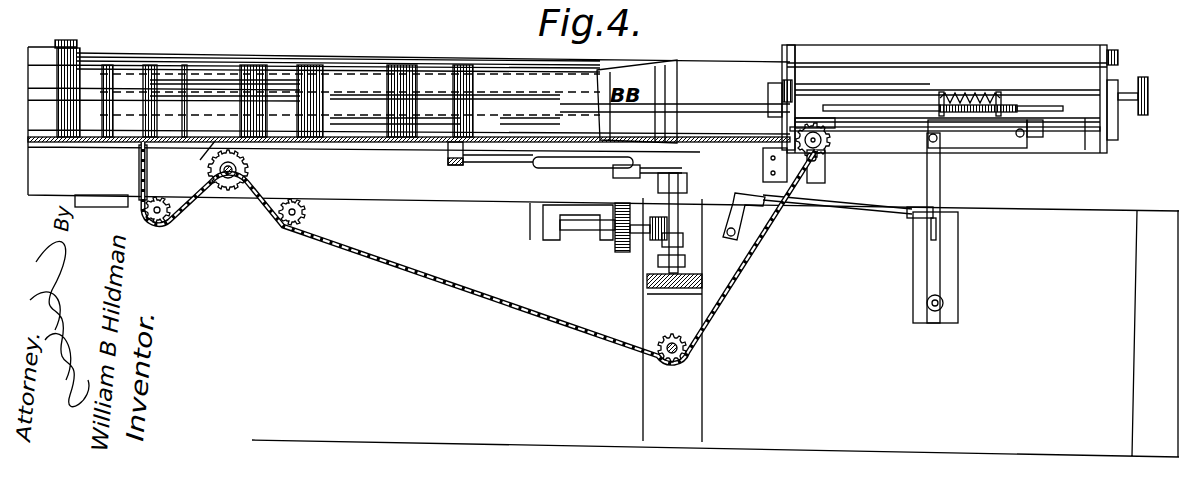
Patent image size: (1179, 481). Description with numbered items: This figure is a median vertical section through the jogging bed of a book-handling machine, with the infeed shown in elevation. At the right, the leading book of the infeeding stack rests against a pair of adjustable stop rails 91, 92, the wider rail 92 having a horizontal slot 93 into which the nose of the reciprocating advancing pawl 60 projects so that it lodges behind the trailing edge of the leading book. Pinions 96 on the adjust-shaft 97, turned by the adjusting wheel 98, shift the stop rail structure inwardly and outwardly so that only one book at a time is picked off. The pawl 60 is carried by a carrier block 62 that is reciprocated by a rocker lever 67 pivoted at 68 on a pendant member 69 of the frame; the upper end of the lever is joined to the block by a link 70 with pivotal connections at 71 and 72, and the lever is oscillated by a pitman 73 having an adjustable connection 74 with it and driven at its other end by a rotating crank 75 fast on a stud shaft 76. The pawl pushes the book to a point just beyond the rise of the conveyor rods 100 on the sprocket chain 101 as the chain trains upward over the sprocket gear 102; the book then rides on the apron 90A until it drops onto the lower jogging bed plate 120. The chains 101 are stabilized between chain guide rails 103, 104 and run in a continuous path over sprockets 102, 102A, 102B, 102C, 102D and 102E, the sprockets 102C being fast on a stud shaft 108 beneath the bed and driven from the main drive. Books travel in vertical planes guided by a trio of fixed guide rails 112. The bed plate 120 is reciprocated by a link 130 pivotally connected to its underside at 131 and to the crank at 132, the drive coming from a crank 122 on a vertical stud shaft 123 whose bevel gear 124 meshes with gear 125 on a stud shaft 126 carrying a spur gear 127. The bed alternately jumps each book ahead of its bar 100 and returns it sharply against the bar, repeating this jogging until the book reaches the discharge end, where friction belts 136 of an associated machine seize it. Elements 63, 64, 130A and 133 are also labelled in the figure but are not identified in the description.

The advancing pawl 60 is at (988, 102).
The carrier block 62 is at (1035, 143).
The bearing 63 is at (1090, 135).
The spring 64 is at (966, 96).
The rocker lever 67 is at (942, 197).
The pivot 68 is at (945, 303).
The pendant member 69 is at (942, 325).
The link 70 is at (990, 145).
The pivotal connection 71 is at (940, 148).
The pivotal connection 72 is at (1025, 145).
The pitman 73 is at (835, 208).
The adjustable connection 74 is at (920, 207).
The rotating crank 75 is at (745, 215).
The stud shaft 76 is at (742, 238).
The apron 90A is at (745, 140).
The stop rail 91 is at (820, 48).
The stop rail 92 is at (738, 88).
The horizontal slot 93 is at (889, 110).
The pinions 96 is at (797, 88).
The adjust-shaft 97 is at (907, 92).
The adjusting wheel 98 is at (1148, 92).
The conveyor rod 100 is at (222, 136).
The sprocket chain 101 is at (212, 115).
The sprocket gear 102 is at (833, 140).
The sprocket 102A is at (688, 352).
The sprocket 102B is at (306, 212).
The sprocket 102C is at (232, 195).
The sprocket 102D is at (160, 225).
The sprocket 102E is at (143, 152).
The chain guide rail 103 is at (522, 120).
The chain guide rail 104 is at (522, 128).
The stud shaft 108 is at (238, 170).
The fixed guide rails 112 is at (363, 128).
The jogging bed plate 120 is at (400, 146).
The crank 122 is at (640, 178).
The vertical stud shaft 123 is at (680, 213).
The bevel gear 124 is at (655, 275).
The gear 125 is at (632, 252).
The stud shaft 126 is at (587, 232).
The spur gear 127 is at (600, 165).
The link 130 is at (520, 163).
The arm 130A is at (187, 157).
The pivotal connection 131 is at (455, 166).
The pivotal connection 132 is at (680, 164).
The guide 133 is at (157, 110).
The friction belts 136 is at (82, 46).